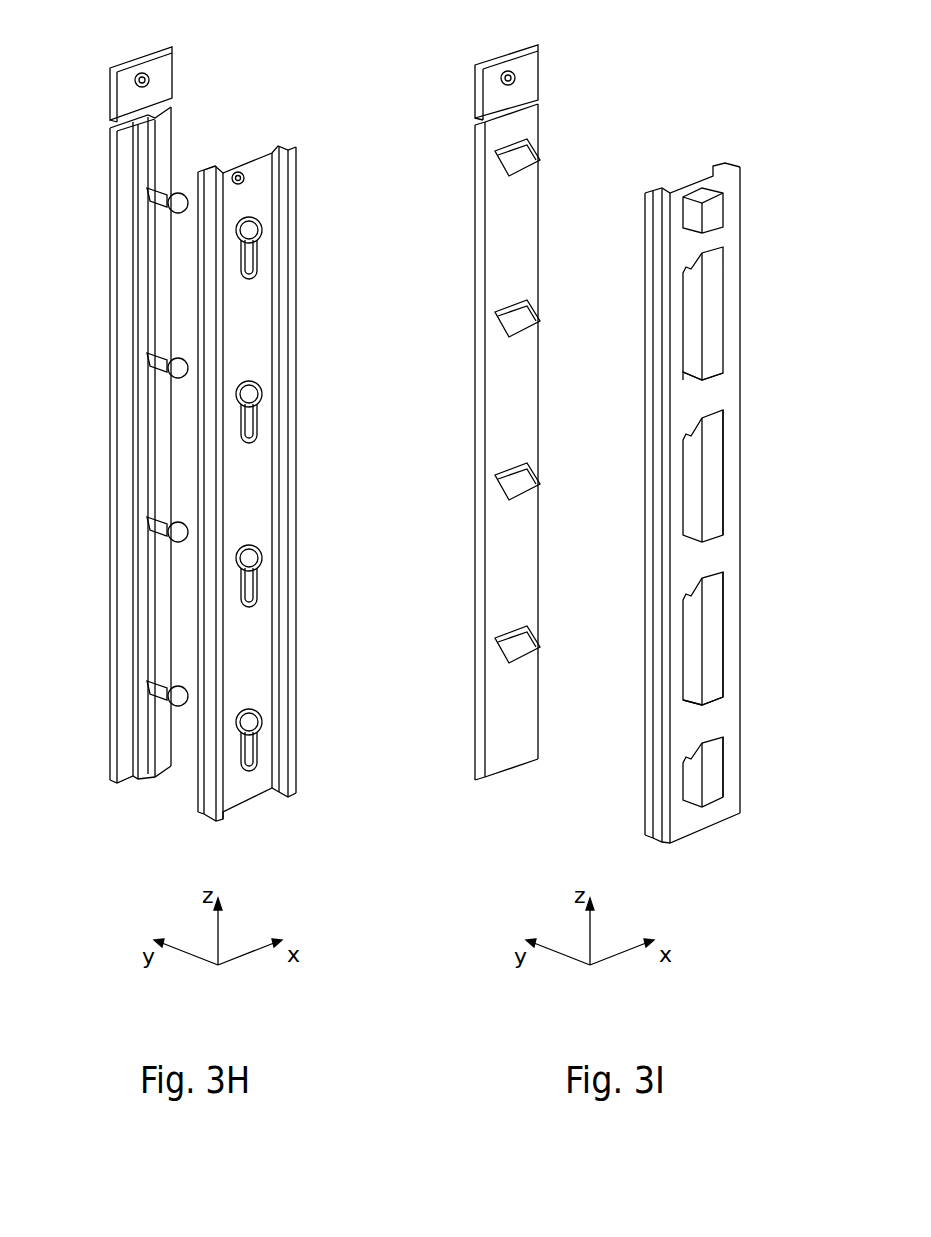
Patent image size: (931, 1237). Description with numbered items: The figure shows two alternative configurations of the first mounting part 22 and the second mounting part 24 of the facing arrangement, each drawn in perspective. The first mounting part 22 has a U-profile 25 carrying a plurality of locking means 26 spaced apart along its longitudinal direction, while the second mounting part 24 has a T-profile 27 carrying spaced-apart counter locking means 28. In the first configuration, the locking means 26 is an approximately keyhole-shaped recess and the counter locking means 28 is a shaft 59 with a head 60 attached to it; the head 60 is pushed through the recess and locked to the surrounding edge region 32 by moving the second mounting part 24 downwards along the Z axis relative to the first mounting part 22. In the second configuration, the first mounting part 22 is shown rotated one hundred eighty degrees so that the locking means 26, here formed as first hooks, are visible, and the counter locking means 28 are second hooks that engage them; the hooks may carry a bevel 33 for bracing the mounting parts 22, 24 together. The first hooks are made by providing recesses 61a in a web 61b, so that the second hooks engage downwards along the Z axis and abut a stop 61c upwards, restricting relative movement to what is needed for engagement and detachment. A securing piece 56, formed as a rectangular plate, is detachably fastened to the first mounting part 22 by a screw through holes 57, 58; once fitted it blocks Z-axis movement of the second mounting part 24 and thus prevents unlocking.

In FIG. 3H, the first mounting part 22 is at (259, 473).
In FIG. 3I, the first mounting part 22 is at (694, 526).
In FIG. 3H, the second mounting part 24 is at (100, 445).
In FIG. 3I, the second mounting part 24 is at (462, 606).
In FIG. 3H, the U-profile 25 is at (208, 815).
In FIG. 3I, the U-profile 25 is at (678, 828).
In FIG. 3H, the locking means 26 is at (290, 487).
In FIG. 3I, the locking means 26 is at (724, 273).
In FIG. 3H, the T-profile 27 is at (122, 447).
In FIG. 3H, the counter locking means 28 is at (132, 412).
In FIG. 3I, the counter locking means 28 is at (574, 401).
In FIG. 3H, the edge region 32 is at (262, 262).
In FIG. 3I, the edge region 32 is at (690, 437).
In FIG. 3I, the bevel 33 is at (503, 329).
In FIG. 3H, the piece 56 is at (126, 73).
In FIG. 3I, the piece 56 is at (493, 72).
In FIG. 3H, the hole 57 is at (142, 73).
In FIG. 3I, the hole 57 is at (508, 71).
In FIG. 3H, the hole 58 is at (238, 172).
In FIG. 3H, the shaft 59 is at (150, 195).
In FIG. 3H, the head 60 is at (173, 204).
In FIG. 3I, the recess 61a is at (716, 555).
In FIG. 3I, the web 61b is at (716, 636).
In FIG. 3I, the stop 61c is at (717, 381).